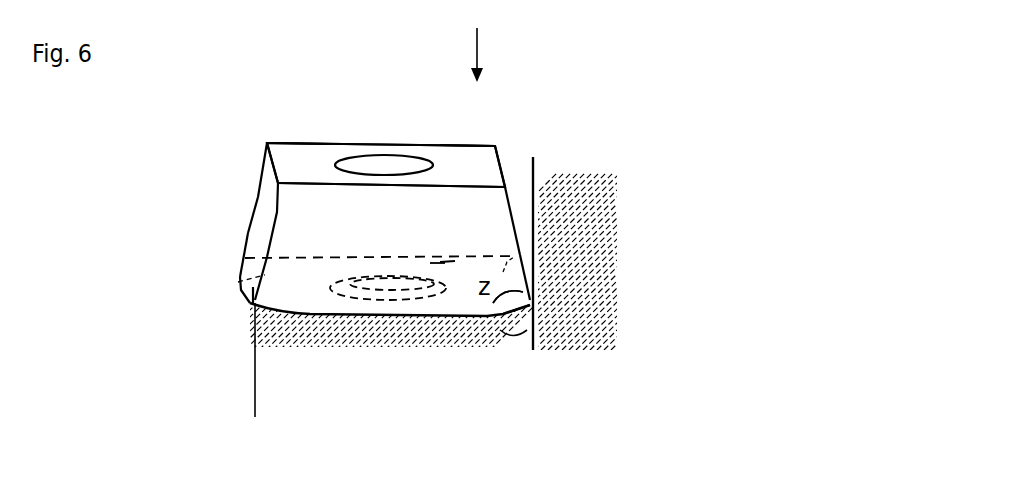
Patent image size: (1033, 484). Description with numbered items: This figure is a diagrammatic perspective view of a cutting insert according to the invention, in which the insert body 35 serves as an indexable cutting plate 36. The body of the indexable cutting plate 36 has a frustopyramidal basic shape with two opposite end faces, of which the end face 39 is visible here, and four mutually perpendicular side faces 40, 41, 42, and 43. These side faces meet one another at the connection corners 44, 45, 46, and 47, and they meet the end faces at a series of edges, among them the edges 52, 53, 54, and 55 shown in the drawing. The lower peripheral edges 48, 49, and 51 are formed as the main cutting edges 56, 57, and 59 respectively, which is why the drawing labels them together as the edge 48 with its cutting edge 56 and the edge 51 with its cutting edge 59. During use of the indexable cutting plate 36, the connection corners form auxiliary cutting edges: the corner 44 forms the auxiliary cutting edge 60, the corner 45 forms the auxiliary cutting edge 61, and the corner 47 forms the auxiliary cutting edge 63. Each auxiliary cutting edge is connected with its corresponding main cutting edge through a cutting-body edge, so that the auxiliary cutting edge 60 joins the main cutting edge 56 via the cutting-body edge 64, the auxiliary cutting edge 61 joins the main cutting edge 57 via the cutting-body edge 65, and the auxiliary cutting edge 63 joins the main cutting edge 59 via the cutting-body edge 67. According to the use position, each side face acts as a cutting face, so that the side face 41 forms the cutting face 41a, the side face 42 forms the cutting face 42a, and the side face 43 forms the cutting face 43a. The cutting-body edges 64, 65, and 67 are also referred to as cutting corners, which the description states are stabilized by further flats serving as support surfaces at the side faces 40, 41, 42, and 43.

The insert body 35 is at (475, 42).
The indexable cutting plate 36 is at (517, 240).
The end face 39 is at (325, 153).
The side face 40 is at (238, 282).
The side face 41 is at (237, 109).
The cutting face 41a is at (266, 178).
The side face 42 is at (322, 93).
The cutting face 42a is at (315, 163).
The side face 43 is at (654, 240).
The cutting face 43a is at (515, 225).
The connection corner 44 is at (270, 213).
The connection corner 45 is at (254, 192).
The connection corner 46 is at (508, 200).
The connection corner 47 is at (483, 232).
The lower peripheral edge 48 is at (146, 312).
The lower peripheral edge 49 is at (437, 263).
The lower peripheral edge 51 is at (388, 366).
The edge 52 is at (265, 176).
The edge 53 is at (475, 147).
The edge 54 is at (500, 158).
The edge 55 is at (387, 187).
The cutting edge 56 is at (246, 302).
The cutting edge 57 is at (447, 262).
The cutting edge 59 is at (400, 347).
The auxiliary cutting edge 60 is at (245, 380).
The auxiliary cutting edge 61 is at (247, 232).
The auxiliary cutting edge 63 is at (530, 293).
The cutting-body edge 64 is at (250, 310).
The cutting-body edge 65 is at (307, 243).
The cutting-body edge 67 is at (530, 300).